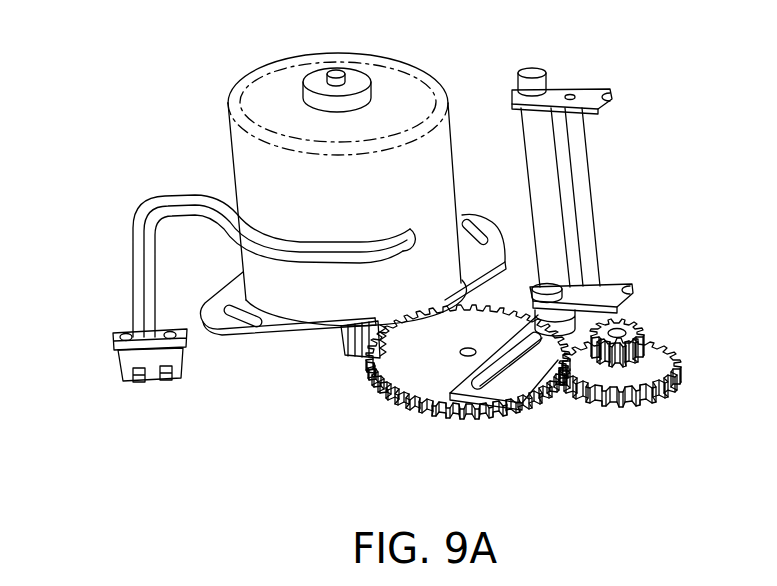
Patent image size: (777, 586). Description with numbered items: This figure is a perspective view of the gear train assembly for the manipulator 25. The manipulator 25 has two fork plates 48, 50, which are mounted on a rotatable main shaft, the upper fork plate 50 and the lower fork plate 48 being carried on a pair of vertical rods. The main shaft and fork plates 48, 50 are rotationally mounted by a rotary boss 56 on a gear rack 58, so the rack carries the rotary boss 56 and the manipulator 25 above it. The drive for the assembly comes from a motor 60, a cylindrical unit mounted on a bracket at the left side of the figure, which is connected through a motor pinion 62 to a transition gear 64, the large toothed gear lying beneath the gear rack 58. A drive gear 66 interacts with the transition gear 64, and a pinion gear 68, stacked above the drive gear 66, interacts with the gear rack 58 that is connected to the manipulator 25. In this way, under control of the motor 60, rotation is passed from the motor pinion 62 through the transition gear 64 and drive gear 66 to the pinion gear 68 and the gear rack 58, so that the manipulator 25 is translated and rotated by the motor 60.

The motor 60 is at (270, 90).
The fork plate 50 is at (590, 88).
The manipulator 25 is at (578, 185).
The rotary boss 56 is at (514, 285).
The fork plate 48 is at (614, 284).
The pinion gear 68 is at (638, 332).
The motor pinion 62 is at (332, 350).
The transition gear 64 is at (388, 405).
The gear rack 58 is at (508, 407).
The drive gear 66 is at (643, 400).